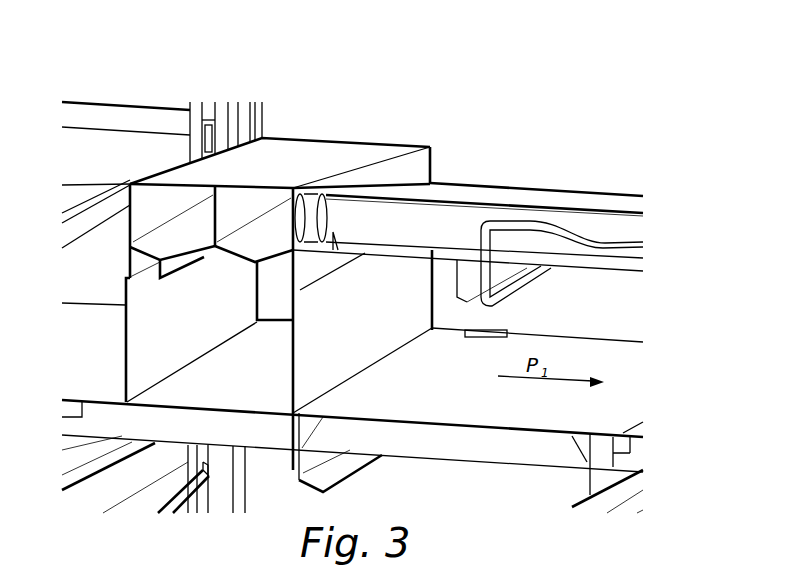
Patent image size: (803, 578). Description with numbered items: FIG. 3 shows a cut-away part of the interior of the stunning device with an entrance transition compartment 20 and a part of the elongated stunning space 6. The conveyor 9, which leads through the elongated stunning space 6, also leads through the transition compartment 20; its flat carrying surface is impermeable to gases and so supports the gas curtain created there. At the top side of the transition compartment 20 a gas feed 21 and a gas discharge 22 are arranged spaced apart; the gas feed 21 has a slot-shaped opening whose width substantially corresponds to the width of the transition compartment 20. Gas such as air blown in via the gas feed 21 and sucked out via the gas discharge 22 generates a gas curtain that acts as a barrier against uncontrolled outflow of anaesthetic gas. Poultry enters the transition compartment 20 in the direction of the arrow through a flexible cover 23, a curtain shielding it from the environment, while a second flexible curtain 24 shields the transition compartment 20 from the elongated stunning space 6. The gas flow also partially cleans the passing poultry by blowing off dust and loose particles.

The elongated stunning space 6 is at (577, 314).
The conveyor 9 is at (522, 397).
The transition compartment 20 is at (188, 318).
The gas feed 21 is at (178, 237).
The gas discharge 22 is at (265, 240).
The flexible cover 23 is at (177, 352).
The second flexible curtain 24 is at (370, 348).